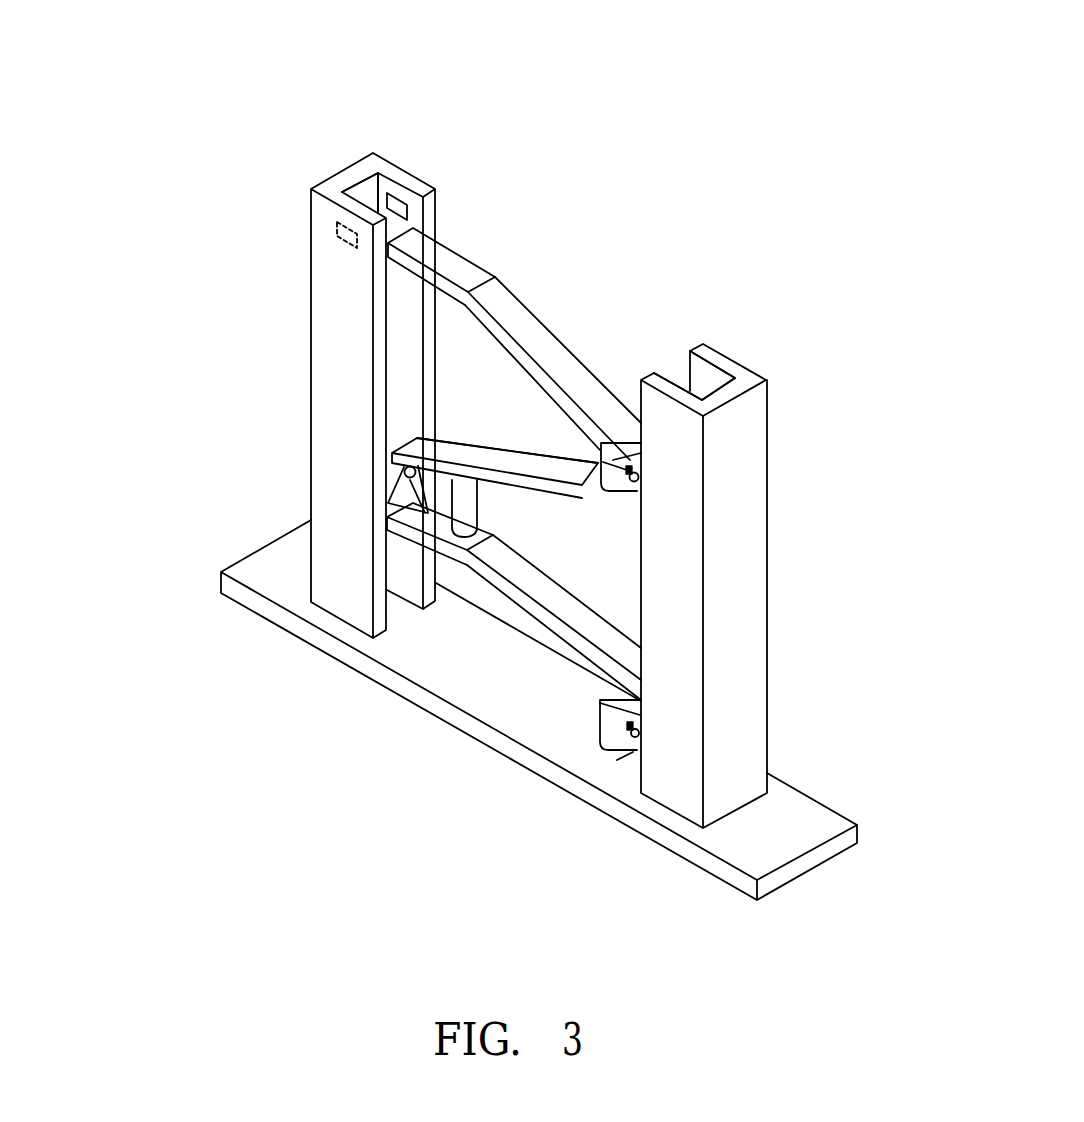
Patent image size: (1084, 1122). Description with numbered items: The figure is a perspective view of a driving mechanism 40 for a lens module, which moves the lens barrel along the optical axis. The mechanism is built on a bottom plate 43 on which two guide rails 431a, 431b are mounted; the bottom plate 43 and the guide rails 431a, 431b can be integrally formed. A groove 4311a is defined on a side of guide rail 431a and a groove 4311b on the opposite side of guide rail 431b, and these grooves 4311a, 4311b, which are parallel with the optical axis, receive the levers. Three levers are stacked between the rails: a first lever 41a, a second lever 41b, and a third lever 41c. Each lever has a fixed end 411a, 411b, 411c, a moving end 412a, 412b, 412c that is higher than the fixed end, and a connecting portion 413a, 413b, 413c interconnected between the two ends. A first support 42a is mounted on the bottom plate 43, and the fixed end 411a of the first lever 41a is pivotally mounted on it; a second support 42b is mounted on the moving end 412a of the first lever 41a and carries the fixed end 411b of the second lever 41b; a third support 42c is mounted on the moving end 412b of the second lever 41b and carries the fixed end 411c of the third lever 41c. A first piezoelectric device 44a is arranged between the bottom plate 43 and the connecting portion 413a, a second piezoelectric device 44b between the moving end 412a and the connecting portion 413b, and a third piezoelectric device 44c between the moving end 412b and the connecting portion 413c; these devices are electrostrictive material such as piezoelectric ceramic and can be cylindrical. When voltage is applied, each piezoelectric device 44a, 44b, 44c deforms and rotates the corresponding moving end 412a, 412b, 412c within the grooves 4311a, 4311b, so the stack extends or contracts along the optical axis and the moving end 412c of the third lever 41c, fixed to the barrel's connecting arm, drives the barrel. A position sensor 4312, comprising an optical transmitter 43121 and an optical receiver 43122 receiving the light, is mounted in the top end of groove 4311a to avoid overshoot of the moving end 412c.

The driving mechanism 40 is at (632, 92).
The bottom plate 43 is at (808, 818).
The guide rail 431a is at (351, 147).
The guide rail 431b is at (727, 392).
The groove 4311a is at (383, 185).
The groove 4311b is at (708, 378).
The position sensor 4312 is at (160, 197).
The optical transmitter 43121 is at (365, 203).
The optical receiver 43122 is at (337, 235).
The first lever 41a is at (436, 848).
The second lever 41b is at (185, 300).
The third lever 41c is at (608, 166).
The fixed end 411a is at (600, 717).
The fixed end 411b is at (462, 510).
The fixed end 411c is at (627, 465).
The moving end 412a is at (457, 547).
The moving end 412b is at (595, 497).
The moving end 412c is at (462, 268).
The connecting portion 413a is at (527, 612).
The connecting portion 413b is at (482, 470).
The connecting portion 413c is at (530, 330).
The first support 42a is at (634, 762).
The second support 42b is at (405, 490).
The third support 42c is at (645, 490).
The first piezoelectric device 44a is at (610, 742).
The second piezoelectric device 44b is at (388, 503).
The third piezoelectric device 44c is at (612, 485).